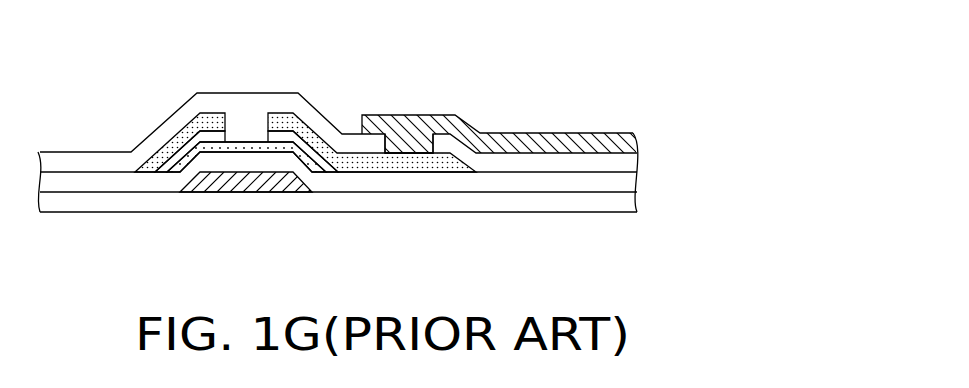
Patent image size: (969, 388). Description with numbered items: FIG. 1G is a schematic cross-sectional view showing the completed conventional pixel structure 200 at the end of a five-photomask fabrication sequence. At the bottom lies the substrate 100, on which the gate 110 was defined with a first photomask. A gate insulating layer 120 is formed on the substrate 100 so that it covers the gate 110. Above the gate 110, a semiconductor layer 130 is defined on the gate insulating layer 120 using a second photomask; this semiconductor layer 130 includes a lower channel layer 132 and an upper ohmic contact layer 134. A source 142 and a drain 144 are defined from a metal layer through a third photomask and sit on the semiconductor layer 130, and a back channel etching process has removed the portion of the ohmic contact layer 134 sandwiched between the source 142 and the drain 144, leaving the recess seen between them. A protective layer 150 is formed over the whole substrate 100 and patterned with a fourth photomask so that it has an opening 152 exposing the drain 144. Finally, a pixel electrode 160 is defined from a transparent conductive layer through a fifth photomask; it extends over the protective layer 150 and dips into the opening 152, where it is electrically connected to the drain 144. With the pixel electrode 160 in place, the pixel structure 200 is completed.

The substrate 100 is at (636, 201).
The gate 110 is at (238, 186).
The gate insulating layer 120 is at (636, 180).
The semiconductor layer 130 is at (198, 95).
The channel layer 132 is at (178, 158).
The ohmic contact layer 134 is at (188, 145).
The source 142 is at (211, 118).
The drain 144 is at (284, 117).
The protective layer 150 is at (634, 164).
The opening 152 is at (390, 142).
The pixel electrode 160 is at (636, 143).
The pixel structure 200 is at (632, 254).